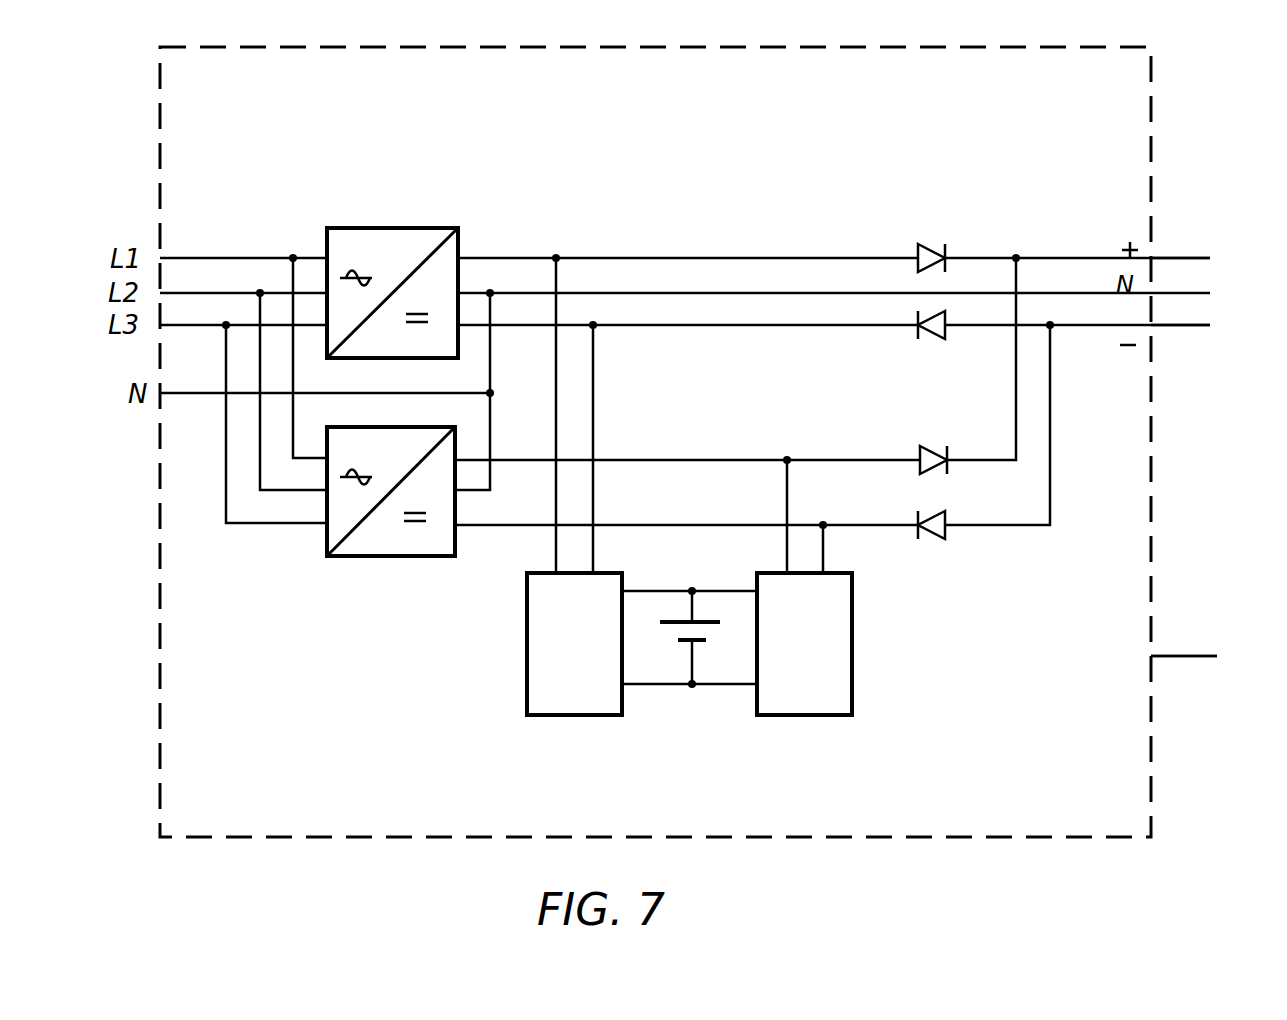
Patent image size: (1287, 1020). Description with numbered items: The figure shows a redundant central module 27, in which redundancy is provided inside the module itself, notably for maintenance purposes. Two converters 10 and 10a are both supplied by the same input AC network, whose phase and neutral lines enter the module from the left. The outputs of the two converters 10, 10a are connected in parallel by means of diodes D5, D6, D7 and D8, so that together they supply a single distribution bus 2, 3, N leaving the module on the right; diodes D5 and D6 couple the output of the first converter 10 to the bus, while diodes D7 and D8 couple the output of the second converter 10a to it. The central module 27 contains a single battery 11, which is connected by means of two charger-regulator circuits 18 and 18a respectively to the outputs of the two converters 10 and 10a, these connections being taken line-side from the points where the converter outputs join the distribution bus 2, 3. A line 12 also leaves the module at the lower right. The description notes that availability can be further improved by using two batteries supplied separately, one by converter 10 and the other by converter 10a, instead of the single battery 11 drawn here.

The central module 27 is at (1153, 130).
The converter 10 is at (375, 228).
The converter 10a is at (327, 537).
The battery 11 is at (690, 655).
The charger-regulator circuit 18 is at (527, 700).
The charger-regulator circuit 18a is at (852, 658).
The distribution bus 2 is at (1180, 262).
The distribution bus 3 is at (1198, 332).
The control line 12 is at (1168, 655).
The diode D5 is at (946, 244).
The diode D6 is at (956, 344).
The diode D7 is at (949, 445).
The diode D8 is at (958, 541).